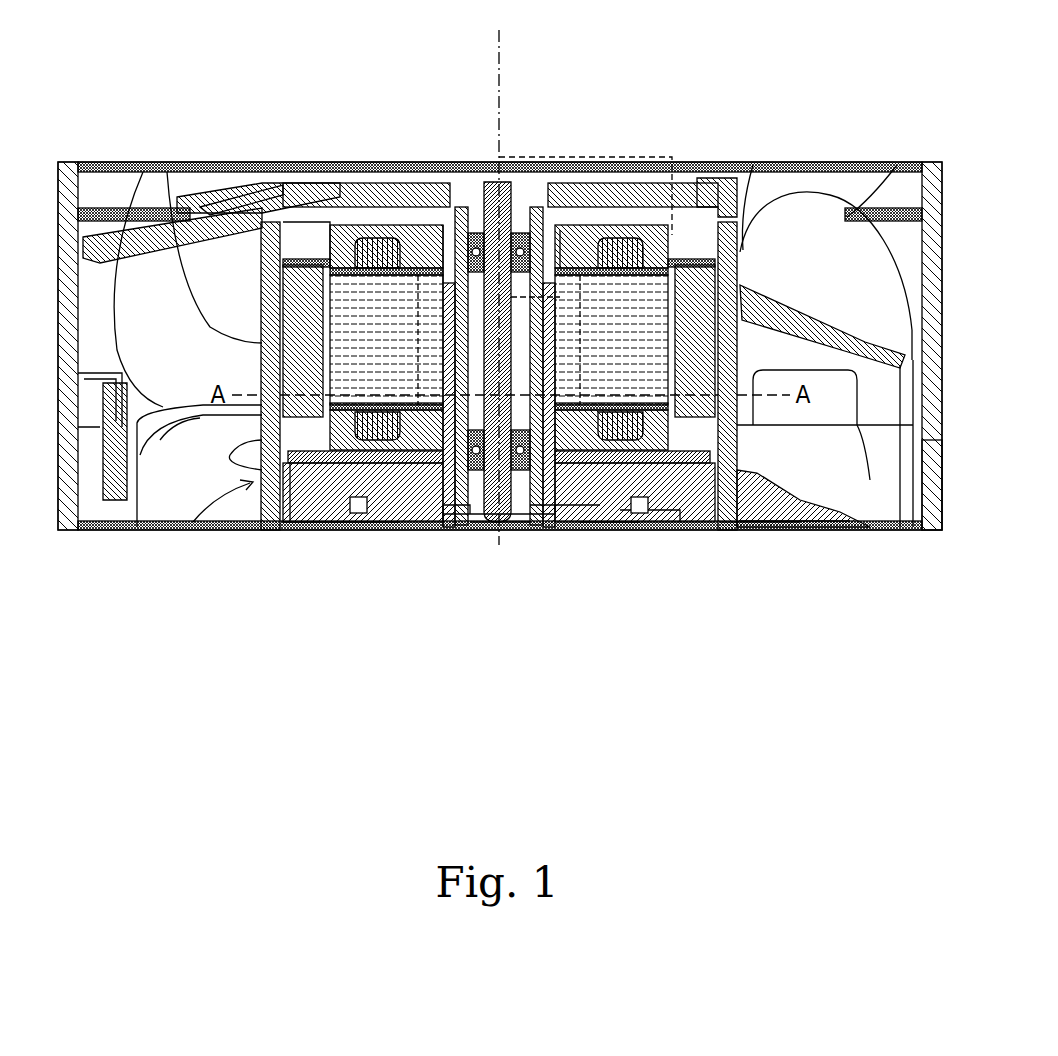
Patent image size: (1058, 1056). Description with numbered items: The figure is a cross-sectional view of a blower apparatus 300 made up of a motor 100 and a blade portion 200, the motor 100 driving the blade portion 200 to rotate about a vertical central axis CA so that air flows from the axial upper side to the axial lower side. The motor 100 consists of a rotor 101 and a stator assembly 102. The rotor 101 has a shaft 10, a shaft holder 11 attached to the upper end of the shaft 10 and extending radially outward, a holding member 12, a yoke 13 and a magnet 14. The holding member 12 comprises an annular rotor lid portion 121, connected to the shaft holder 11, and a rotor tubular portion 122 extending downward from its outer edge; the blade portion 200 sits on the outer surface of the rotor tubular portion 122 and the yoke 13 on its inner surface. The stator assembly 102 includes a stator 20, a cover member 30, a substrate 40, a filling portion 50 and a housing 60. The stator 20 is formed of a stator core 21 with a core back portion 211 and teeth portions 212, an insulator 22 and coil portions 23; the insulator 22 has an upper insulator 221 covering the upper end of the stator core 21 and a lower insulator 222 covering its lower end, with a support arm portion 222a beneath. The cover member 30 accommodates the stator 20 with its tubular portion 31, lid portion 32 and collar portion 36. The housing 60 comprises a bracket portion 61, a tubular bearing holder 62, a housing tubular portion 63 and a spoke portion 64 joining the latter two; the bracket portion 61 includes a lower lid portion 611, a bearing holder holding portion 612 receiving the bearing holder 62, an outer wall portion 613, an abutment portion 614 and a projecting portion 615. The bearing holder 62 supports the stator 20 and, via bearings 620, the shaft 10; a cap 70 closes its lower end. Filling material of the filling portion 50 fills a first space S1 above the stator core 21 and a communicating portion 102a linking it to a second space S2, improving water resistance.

The blower apparatus 300 is at (103, 120).
The motor 100 is at (181, 532).
The blade portion 200 is at (880, 190).
The housing 60 is at (62, 538).
The bracket portion 61 is at (283, 675).
The lower lid portion 611 is at (341, 530).
The bearing holder holding portion 612 is at (600, 530).
The outer wall portion 613 is at (763, 530).
The abutment portion 614 is at (311, 530).
The projecting portion 615 is at (523, 530).
The bearing holder 62 is at (453, 537).
The bearing 620 is at (547, 530).
The housing tubular portion 63 is at (930, 537).
The spoke portion 64 is at (777, 537).
The cap 70 is at (560, 537).
The cover member 30 is at (283, 228).
The tubular portion 31 is at (147, 172).
The lid portion 32 is at (305, 215).
The collar portion 36 is at (455, 175).
The substrate 40 is at (279, 530).
The stator 20 is at (413, 60).
The stator core 21 is at (405, 290).
The insulator 22 is at (412, 258).
The coil portion 23 is at (370, 285).
The upper insulator 221 is at (230, 250).
The lower insulator 222 is at (254, 530).
The support arm portion 222a is at (442, 530).
The stator assembly 102 is at (245, 200).
The communicating portion 102a is at (643, 530).
The rotor 101 is at (520, 47).
The shaft 10 is at (503, 182).
The shaft holder 11 is at (537, 205).
The holding member 12 is at (670, 95).
The rotor lid portion 121 is at (692, 262).
The rotor tubular portion 122 is at (751, 215).
The yoke 13 is at (778, 310).
The magnet 14 is at (820, 307).
The filling portion 50 is at (606, 240).
The core back portion 211 is at (580, 232).
The teeth portion 212 is at (612, 240).
The first space S1 is at (440, 175).
The second space S2 is at (380, 530).
The central axis CA is at (499, 274).